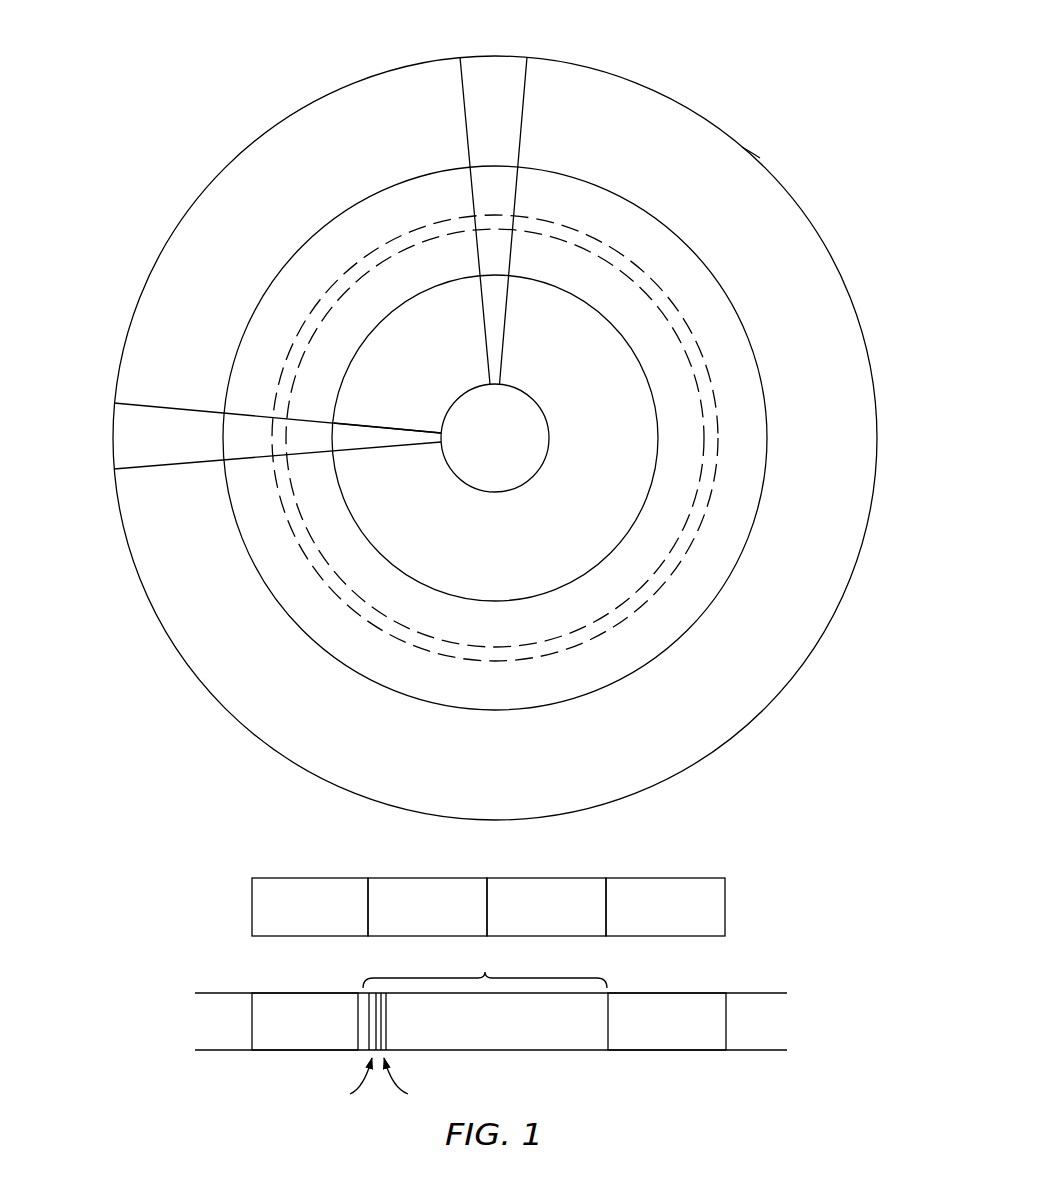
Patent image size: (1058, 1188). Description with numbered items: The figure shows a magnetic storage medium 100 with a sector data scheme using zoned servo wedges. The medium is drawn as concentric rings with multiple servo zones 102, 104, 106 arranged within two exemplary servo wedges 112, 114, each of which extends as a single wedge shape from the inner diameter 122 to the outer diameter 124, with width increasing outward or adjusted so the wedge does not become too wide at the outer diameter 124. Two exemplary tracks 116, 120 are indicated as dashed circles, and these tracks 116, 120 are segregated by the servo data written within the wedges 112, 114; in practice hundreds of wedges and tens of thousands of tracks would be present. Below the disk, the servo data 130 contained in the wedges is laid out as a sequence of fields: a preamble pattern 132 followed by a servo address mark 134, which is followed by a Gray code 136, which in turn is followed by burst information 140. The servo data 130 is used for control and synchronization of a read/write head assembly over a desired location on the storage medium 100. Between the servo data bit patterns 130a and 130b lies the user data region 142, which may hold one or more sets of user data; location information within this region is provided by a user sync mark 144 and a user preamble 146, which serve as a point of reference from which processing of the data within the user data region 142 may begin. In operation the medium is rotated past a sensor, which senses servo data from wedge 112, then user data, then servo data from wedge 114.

The magnetic storage medium 100 is at (806, 84).
The servo zone 102 is at (183, 448).
The servo zone 104 is at (259, 448).
The servo zone 106 is at (363, 448).
The servo wedge 112 is at (113, 420).
The servo wedge 114 is at (477, 57).
The track 116 is at (556, 222).
The track 120 is at (604, 262).
The inner diameter 122 is at (546, 437).
The outer diameter 124 is at (742, 147).
The servo data 130 is at (762, 848).
The servo data bit pattern 130a is at (328, 1046).
The servo data bit pattern 130b is at (690, 1046).
The preamble pattern 132 is at (326, 932).
The servo address mark 134 is at (444, 932).
The Gray code 136 is at (563, 932).
The burst information 140 is at (682, 932).
The user data region 142 is at (530, 961).
The user sync mark 144 is at (547, 1098).
The user preamble 146 is at (224, 1098).